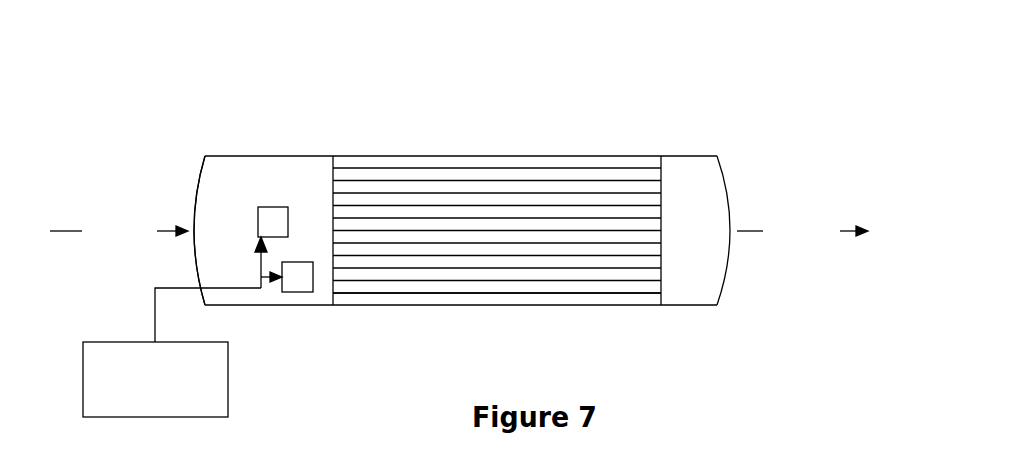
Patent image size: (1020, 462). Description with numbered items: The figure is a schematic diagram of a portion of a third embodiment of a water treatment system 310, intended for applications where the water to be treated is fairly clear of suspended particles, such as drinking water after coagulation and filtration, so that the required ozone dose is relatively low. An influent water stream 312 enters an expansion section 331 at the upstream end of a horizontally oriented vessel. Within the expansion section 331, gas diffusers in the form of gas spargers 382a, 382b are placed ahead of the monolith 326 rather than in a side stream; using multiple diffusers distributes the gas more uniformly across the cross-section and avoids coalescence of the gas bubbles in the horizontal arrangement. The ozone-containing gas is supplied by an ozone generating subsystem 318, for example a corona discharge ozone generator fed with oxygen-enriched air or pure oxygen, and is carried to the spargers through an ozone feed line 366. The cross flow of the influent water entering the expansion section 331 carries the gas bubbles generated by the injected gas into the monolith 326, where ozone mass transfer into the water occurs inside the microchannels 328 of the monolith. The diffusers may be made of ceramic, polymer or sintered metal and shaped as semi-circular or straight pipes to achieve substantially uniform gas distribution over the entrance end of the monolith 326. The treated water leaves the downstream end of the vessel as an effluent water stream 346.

The water treatment system 310 is at (694, 128).
The influent water stream 312 is at (118, 196).
The ozone generating subsystem 318 is at (83, 365).
The monolith 326 is at (488, 156).
The microchannels 328 is at (516, 298).
The expansion section 331 is at (251, 156).
The effluent water stream 346 is at (810, 197).
The ozone feed line 366 is at (154, 298).
The gas sparger 382a is at (286, 207).
The gas sparger 382b is at (290, 292).